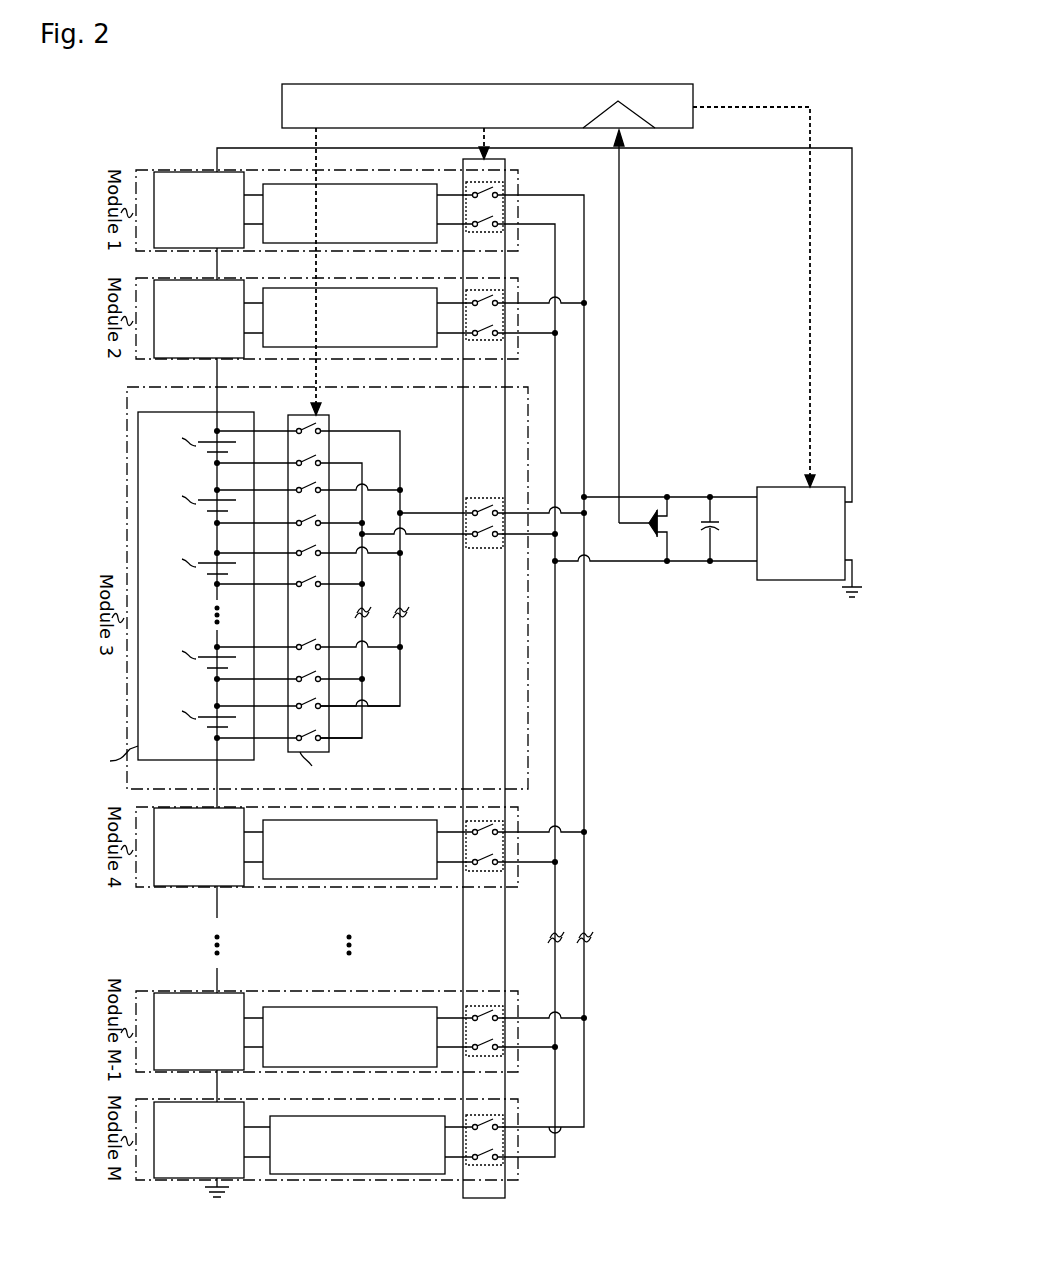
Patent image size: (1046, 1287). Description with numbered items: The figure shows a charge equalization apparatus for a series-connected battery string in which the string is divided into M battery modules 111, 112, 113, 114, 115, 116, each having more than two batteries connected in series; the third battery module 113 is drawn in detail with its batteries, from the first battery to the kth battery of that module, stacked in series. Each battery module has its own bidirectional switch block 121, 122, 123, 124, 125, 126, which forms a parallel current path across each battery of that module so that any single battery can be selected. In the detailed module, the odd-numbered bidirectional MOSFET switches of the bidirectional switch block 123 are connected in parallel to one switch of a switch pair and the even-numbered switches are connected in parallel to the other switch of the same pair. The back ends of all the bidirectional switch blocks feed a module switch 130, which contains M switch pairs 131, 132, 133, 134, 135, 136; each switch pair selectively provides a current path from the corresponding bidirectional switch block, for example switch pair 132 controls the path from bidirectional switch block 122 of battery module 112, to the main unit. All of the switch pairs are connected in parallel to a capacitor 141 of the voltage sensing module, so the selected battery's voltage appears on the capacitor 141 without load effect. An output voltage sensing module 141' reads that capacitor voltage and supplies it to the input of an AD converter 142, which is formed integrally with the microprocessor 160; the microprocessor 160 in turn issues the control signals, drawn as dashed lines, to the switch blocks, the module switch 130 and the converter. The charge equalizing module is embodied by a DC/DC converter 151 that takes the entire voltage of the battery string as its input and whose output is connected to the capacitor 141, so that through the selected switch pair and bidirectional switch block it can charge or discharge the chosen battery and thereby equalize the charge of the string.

The battery module 111 is at (170, 249).
The battery module 112 is at (176, 358).
The battery module 113 is at (176, 411).
The battery module 114 is at (176, 886).
The battery module 115 is at (209, 991).
The battery module 116 is at (209, 1101).
The bidirectional switch block 121 is at (338, 243).
The bidirectional switch block 122 is at (338, 347).
The bidirectional switch block 123 is at (303, 413).
The bidirectional switch block 124 is at (338, 879).
The bidirectional switch block 125 is at (360, 1007).
The bidirectional switch block 126 is at (360, 1115).
The module switch 130 is at (480, 1198).
The switch pair 131 is at (480, 232).
The switch pair 132 is at (480, 340).
The switch pair 133 is at (480, 548).
The switch pair 134 is at (492, 883).
The switch pair 135 is at (492, 1068).
The switch pair 136 is at (492, 1177).
The capacitor 141 is at (696, 529).
The output voltage sensing module 141' is at (643, 529).
The AD converter 142 is at (604, 132).
The DC/DC converter 151 is at (797, 581).
The microprocessor 160 is at (405, 86).